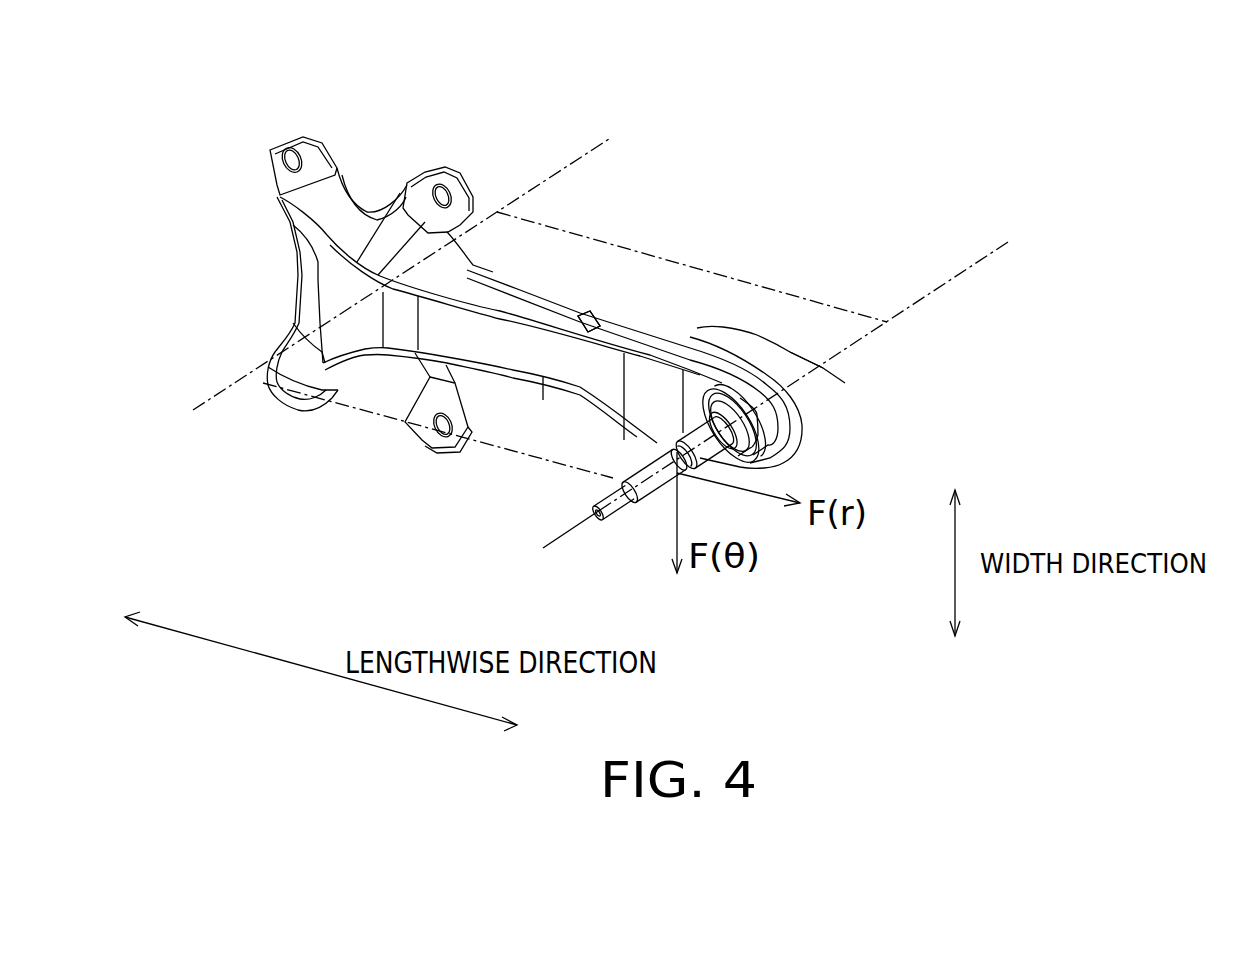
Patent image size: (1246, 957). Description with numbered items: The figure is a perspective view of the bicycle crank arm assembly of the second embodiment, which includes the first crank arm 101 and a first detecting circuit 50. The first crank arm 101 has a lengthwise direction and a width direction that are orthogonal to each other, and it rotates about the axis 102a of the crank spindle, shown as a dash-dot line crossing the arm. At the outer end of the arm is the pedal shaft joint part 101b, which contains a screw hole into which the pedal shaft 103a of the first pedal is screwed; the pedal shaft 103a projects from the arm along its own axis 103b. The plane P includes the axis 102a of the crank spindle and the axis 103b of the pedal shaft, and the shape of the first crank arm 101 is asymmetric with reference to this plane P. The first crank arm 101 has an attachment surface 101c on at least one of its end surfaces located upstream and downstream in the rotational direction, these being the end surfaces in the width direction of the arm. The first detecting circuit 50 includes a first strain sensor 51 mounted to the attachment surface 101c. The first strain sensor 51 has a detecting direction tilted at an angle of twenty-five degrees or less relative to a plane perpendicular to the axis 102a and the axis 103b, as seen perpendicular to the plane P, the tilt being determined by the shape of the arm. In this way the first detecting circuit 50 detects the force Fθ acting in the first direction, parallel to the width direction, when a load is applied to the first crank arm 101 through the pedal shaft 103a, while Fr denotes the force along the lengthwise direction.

The first crank arm 101 is at (292, 310).
The pedal shaft joint part 101b is at (760, 457).
The attachment surface 101c is at (828, 360).
The axis of the crank spindle 102a is at (575, 160).
The pedal shaft 103a is at (650, 502).
The axis of the pedal shaft 103b is at (950, 279).
The first detecting circuit 50 is at (588, 311).
The first strain sensor 51 is at (597, 312).
The plane P is at (702, 288).